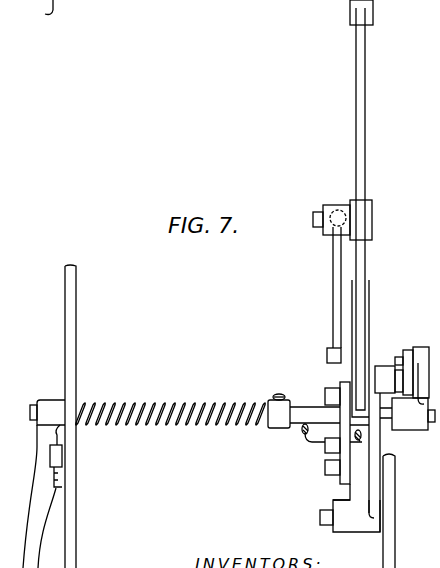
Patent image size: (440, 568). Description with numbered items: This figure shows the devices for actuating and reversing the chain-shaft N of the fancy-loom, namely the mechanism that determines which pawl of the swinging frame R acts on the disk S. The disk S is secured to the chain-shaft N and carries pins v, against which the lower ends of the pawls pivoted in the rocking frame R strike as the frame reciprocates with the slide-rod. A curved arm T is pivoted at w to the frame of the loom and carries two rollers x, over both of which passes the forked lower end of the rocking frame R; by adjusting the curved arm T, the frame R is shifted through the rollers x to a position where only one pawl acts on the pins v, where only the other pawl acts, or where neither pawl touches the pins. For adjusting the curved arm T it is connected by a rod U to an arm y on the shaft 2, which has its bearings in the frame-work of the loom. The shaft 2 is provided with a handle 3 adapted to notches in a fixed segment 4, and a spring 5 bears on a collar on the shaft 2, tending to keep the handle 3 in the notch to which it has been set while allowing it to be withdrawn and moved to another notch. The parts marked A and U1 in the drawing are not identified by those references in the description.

The shaft 2 is at (30, 413).
The handle 3 is at (33, 512).
The fixed segment 4 is at (56, 466).
The spring 5 is at (188, 405).
The frame bar A is at (76, 343).
The swinging frame R is at (365, 113).
The link U1 is at (333, 290).
The rod U is at (403, 353).
The pins v is at (325, 396).
The rollers x is at (361, 356).
The arm y is at (407, 388).
The disk S is at (350, 457).
The chain-shaft N is at (309, 441).
The curved arm T is at (381, 440).
The pivot w is at (320, 517).